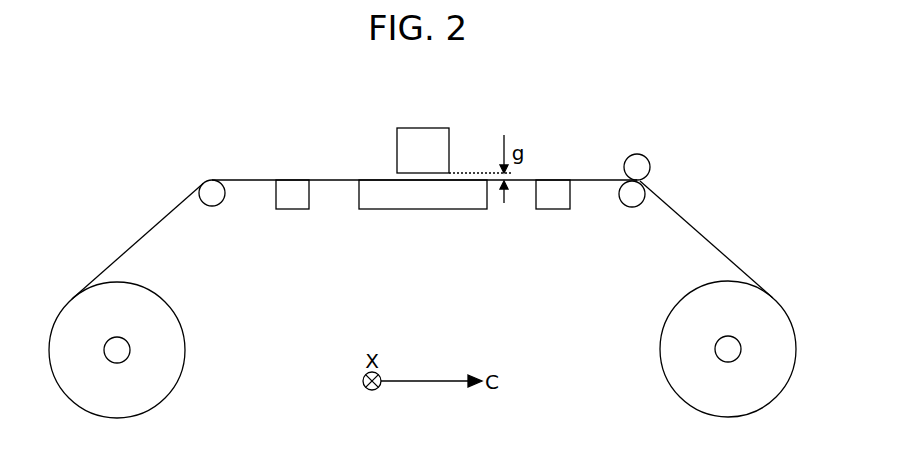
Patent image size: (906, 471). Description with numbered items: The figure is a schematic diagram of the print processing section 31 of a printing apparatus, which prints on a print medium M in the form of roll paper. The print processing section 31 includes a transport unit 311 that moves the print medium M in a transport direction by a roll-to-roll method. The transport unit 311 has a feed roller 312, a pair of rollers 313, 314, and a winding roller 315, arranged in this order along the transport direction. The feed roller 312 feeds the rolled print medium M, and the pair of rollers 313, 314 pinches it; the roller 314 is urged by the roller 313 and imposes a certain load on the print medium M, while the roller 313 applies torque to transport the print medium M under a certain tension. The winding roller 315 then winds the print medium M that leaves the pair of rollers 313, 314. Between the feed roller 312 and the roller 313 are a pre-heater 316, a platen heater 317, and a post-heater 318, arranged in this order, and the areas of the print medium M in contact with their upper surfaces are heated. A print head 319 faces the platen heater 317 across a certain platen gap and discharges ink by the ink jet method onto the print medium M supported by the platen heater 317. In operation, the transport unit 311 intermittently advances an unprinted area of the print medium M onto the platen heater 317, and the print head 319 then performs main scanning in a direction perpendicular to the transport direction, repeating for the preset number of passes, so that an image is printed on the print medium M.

The print processing section 31 is at (145, 78).
The print medium M is at (142, 238).
The transport unit 311 is at (282, 365).
The feed roller 312 is at (105, 350).
The roller 313 is at (632, 197).
The roller 314 is at (642, 163).
The winding roller 315 is at (722, 349).
The pre-heater 316 is at (293, 199).
The platen heater 317 is at (427, 199).
The post-heater 318 is at (550, 199).
The print head 319 is at (427, 137).